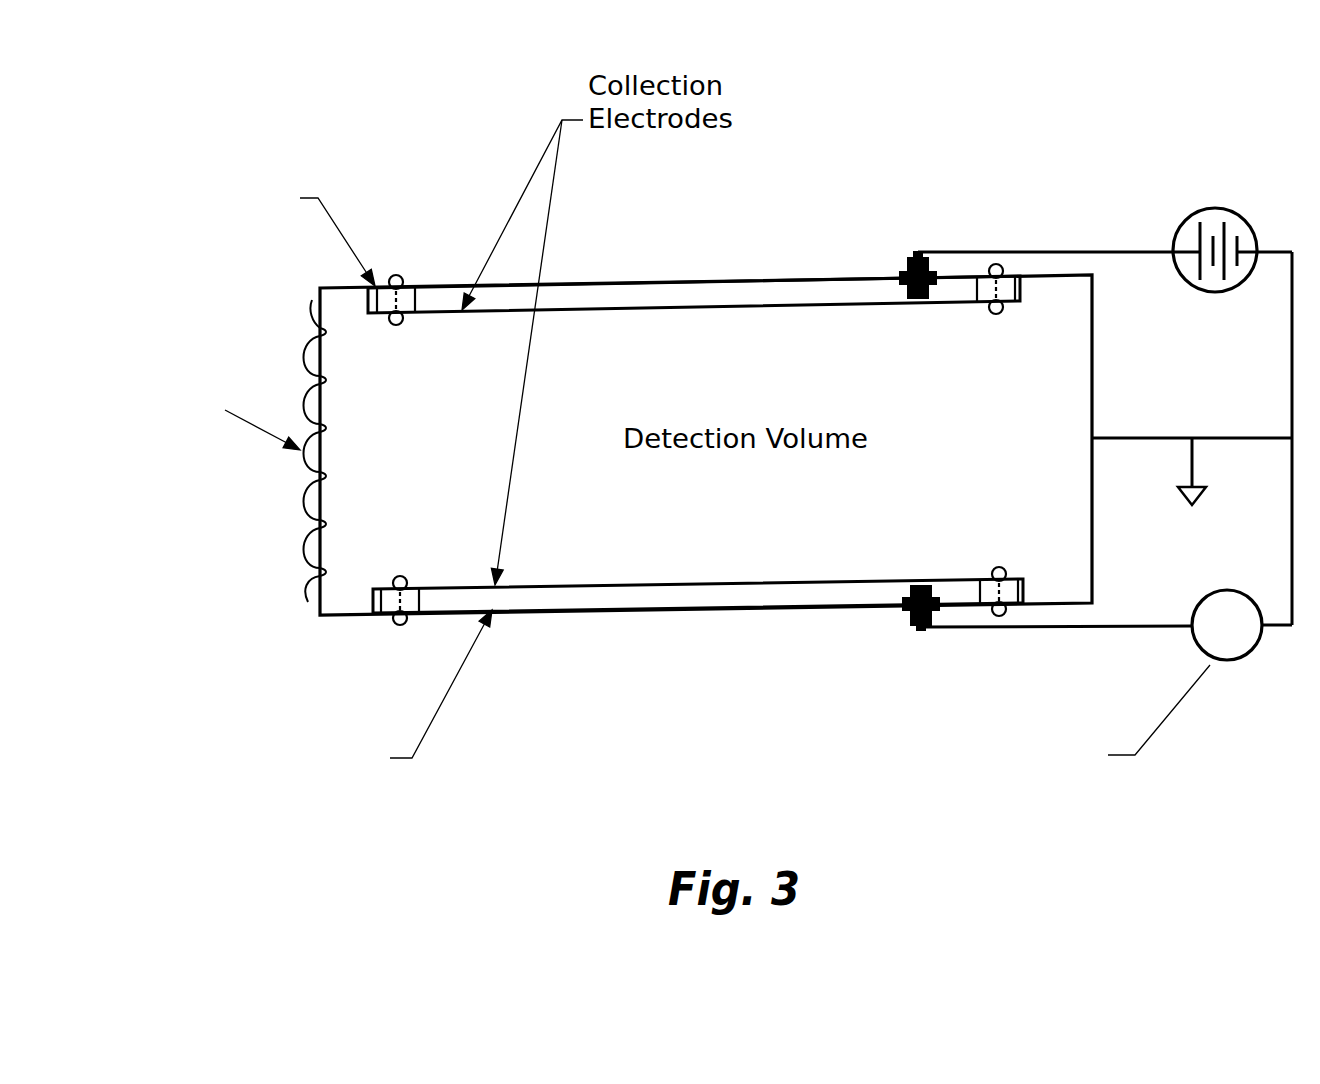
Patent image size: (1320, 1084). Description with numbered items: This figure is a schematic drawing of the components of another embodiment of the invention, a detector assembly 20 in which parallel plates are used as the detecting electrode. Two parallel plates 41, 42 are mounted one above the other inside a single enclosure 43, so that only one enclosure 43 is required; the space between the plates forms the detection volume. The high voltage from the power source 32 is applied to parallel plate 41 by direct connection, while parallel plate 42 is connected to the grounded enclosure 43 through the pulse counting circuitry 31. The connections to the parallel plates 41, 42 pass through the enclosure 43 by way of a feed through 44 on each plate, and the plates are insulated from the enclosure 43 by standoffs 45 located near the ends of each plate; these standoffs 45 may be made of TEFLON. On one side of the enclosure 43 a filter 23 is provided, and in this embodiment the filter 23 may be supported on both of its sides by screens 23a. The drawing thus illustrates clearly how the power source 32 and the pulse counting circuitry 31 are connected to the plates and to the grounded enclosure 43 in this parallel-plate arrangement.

The radiation detector 20 is at (668, 448).
The filter 23 is at (297, 451).
The screens 23a is at (437, 490).
The pulse counting circuitry 31 is at (1262, 642).
The power source 32 is at (1213, 200).
The parallel plate 41 is at (762, 312).
The parallel plate 42 is at (550, 586).
The enclosure 43 is at (578, 275).
The feed through 44 is at (900, 268).
The standoffs 45 is at (407, 282).